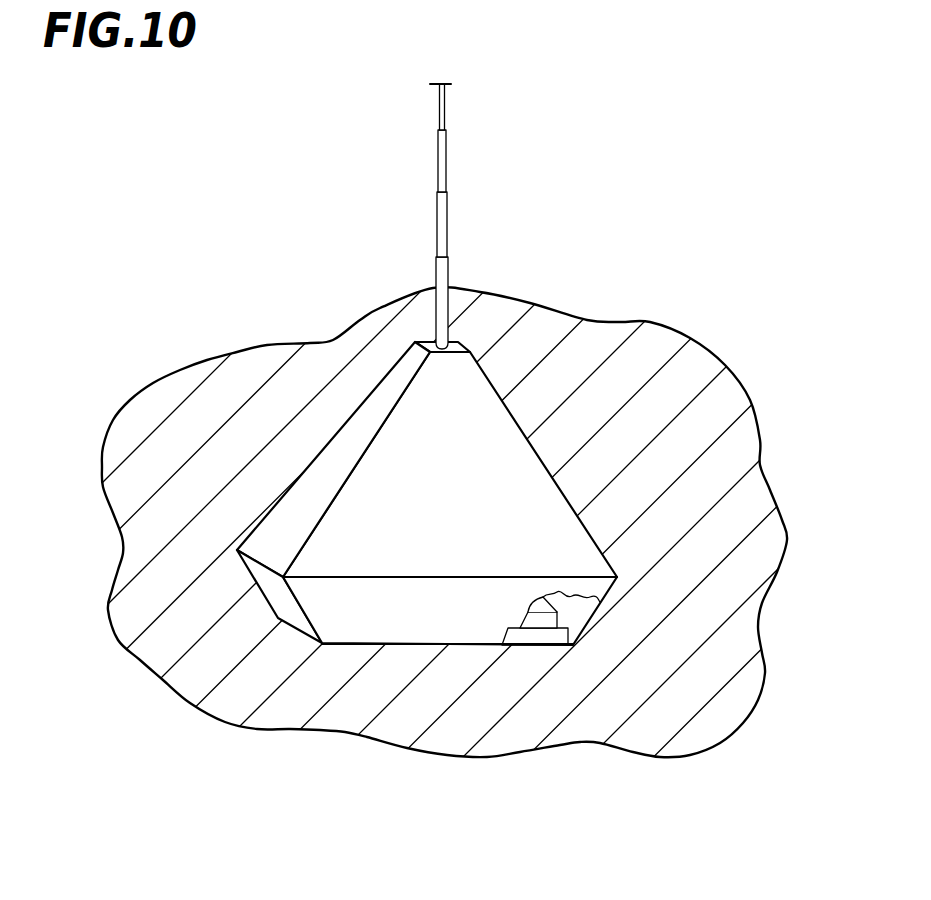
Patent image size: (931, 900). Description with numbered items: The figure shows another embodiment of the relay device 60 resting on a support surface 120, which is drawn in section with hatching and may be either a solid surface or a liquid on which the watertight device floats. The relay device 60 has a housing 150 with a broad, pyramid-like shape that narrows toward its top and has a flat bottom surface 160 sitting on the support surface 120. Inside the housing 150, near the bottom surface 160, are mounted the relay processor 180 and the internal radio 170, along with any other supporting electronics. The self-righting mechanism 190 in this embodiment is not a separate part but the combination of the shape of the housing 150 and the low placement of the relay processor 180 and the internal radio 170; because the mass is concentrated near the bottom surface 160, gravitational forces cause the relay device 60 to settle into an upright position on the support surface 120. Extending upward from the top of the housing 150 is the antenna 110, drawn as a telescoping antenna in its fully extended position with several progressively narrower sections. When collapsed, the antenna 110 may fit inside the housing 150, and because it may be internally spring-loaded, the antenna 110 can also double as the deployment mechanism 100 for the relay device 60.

The relay device 60 is at (440, 411).
The deployment mechanism 100 is at (448, 222).
The antenna 110 is at (528, 216).
The support surface 120 is at (243, 670).
The housing 150 is at (497, 445).
The bottom surface 160 is at (433, 664).
The internal radio 170 is at (552, 622).
The relay processor 180 is at (548, 640).
The self-righting mechanism 190 is at (497, 524).